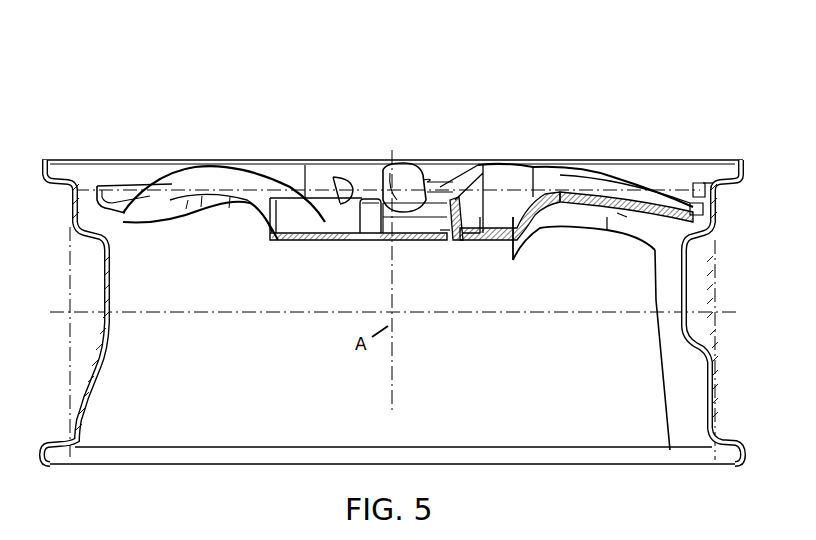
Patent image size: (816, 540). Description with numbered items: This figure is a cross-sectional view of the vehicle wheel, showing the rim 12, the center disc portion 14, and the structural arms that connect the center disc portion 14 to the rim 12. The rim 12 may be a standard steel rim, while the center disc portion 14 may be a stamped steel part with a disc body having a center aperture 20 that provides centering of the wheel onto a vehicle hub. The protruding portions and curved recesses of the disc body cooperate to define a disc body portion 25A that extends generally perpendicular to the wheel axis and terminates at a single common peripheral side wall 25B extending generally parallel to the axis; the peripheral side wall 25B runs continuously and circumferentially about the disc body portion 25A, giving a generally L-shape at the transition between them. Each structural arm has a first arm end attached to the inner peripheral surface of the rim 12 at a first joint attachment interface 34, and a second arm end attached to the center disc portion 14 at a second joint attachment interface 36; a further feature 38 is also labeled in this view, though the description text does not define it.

The rim 12 is at (86, 368).
The center disc portion 14 is at (332, 234).
The center aperture 20 is at (434, 238).
The first joint attachment interface 34 is at (708, 180).
The second joint attachment interface 36 is at (455, 248).
The hatched rib 38 is at (497, 240).
The disc body portion 25A is at (294, 255).
The peripheral side wall 25B is at (262, 196).